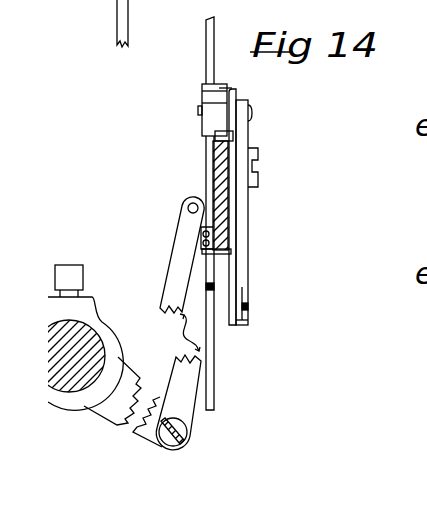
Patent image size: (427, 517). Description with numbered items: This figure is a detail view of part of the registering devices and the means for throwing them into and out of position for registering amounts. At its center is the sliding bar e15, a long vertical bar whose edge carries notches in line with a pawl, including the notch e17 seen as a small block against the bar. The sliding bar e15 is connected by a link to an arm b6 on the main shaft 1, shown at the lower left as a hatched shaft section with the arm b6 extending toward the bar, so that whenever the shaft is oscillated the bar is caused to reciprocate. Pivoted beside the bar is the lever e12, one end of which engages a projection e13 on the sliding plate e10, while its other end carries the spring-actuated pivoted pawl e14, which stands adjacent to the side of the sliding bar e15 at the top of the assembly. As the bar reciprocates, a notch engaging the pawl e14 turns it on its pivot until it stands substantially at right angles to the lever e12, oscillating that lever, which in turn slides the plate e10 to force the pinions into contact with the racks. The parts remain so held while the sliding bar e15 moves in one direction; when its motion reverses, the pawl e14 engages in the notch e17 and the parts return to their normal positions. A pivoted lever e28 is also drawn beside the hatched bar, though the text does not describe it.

The main shaft 1 is at (90, 338).
The arm b6 is at (130, 378).
The sliding bar or plate e10 is at (236, 270).
The lever e12 is at (240, 216).
The projection e13 is at (255, 305).
The spring-actuated pivoted pawl e14 is at (207, 123).
The sliding bar e15 is at (214, 350).
The notch e17 is at (206, 285).
The pivoted lever e28 is at (183, 240).